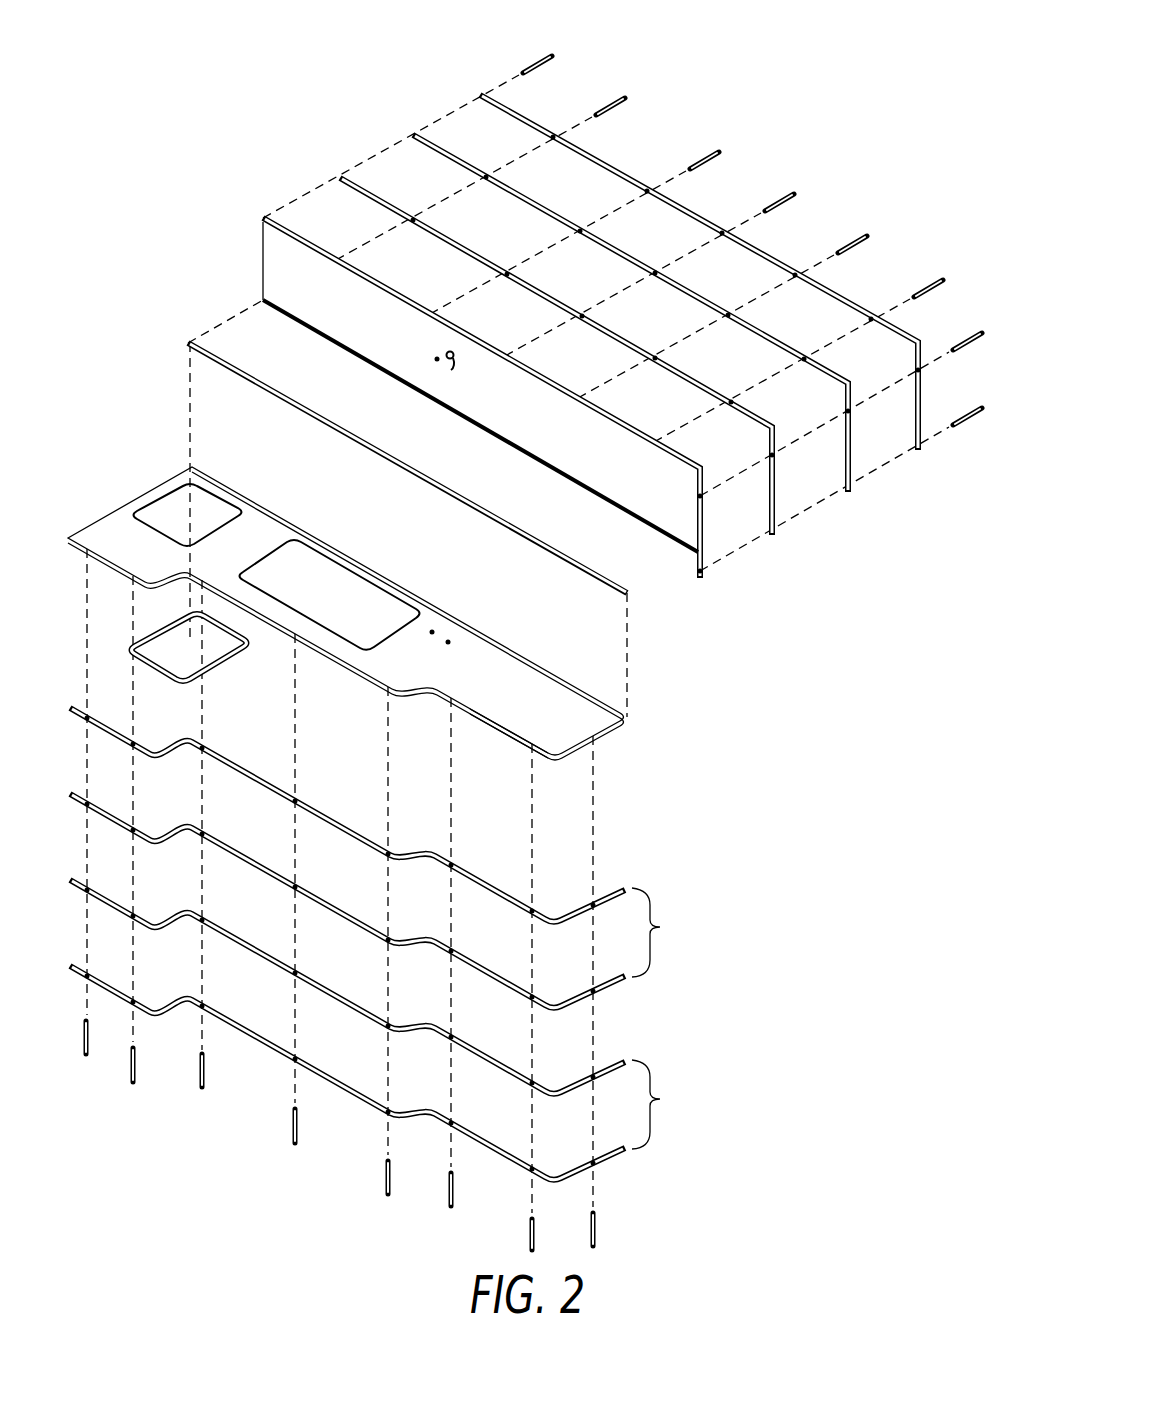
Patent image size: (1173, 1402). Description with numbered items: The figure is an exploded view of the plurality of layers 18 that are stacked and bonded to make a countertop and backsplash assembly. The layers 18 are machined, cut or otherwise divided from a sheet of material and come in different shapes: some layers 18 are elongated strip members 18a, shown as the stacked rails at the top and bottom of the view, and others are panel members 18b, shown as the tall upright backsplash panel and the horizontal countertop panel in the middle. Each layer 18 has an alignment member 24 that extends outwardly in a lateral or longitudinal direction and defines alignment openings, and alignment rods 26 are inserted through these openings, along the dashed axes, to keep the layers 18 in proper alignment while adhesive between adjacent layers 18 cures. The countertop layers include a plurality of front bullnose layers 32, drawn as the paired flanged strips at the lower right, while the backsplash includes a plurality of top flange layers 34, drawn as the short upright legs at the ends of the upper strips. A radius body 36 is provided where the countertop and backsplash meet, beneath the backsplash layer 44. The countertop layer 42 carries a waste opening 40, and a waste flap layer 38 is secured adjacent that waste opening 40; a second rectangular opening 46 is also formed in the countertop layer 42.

The layers 18 is at (346, 177).
The strip members 18a is at (511, 612).
The panel members 18b is at (405, 497).
The alignment member 24 is at (513, 612).
The alignment rods 26 is at (612, 103).
The front bullnose layers 32 is at (664, 1018).
The top flange layers 34 is at (922, 447).
The radius body 36 is at (486, 520).
The waste flap layer 38 is at (228, 663).
The waste opening 40 is at (158, 510).
The countertop layer 42 is at (573, 725).
The backsplash layer 44 is at (667, 520).
The opening 46 is at (312, 570).